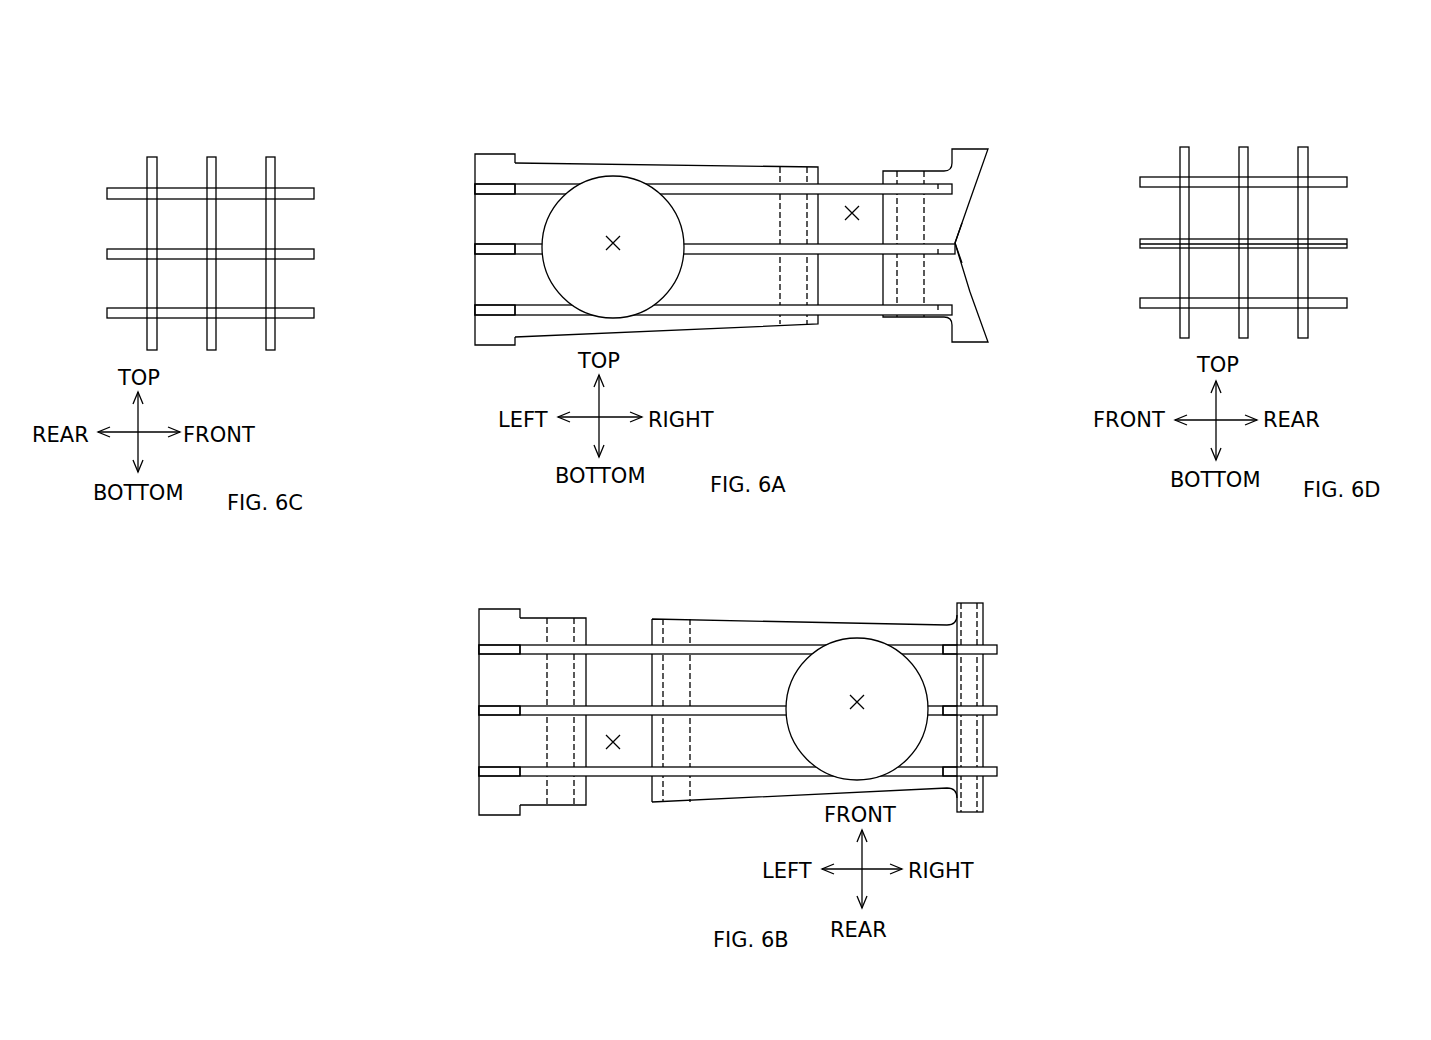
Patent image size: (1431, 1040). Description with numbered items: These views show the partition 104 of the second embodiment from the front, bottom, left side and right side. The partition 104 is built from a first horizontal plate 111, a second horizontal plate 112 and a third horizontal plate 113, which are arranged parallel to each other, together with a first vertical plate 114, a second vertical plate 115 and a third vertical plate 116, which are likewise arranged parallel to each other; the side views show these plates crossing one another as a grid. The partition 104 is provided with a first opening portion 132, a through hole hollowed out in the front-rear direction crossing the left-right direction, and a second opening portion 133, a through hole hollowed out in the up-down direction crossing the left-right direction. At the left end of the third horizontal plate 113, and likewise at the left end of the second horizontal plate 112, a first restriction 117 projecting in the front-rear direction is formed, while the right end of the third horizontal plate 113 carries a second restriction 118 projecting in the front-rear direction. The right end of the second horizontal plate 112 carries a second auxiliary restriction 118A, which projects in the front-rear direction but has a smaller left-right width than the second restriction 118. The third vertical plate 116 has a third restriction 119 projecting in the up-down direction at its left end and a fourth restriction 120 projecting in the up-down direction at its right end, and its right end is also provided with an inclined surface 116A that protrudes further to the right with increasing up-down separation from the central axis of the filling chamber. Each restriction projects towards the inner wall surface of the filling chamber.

In FIG. 6A, the partition 104 is at (740, 238).
In FIG. 6B, the partition 104 is at (735, 708).
In FIG. 6C, the first horizontal plate 111 is at (298, 189).
In FIG. 6D, the first horizontal plate 111 is at (1330, 178).
In FIG. 6A, the first horizontal plate 111 is at (743, 168).
In FIG. 6C, the second horizontal plate 112 is at (298, 250).
In FIG. 6D, the second horizontal plate 112 is at (1330, 240).
In FIG. 6A, the second horizontal plate 112 is at (702, 246).
In FIG. 6C, the third horizontal plate 113 is at (298, 309).
In FIG. 6D, the third horizontal plate 113 is at (1330, 299).
In FIG. 6A, the third horizontal plate 113 is at (745, 315).
In FIG. 6B, the third horizontal plate 113 is at (532, 622).
In FIG. 6C, the first vertical plate 114 is at (152, 157).
In FIG. 6D, the first vertical plate 114 is at (1303, 147).
In FIG. 6B, the first vertical plate 114 is at (640, 776).
In FIG. 6C, the second vertical plate 115 is at (211, 157).
In FIG. 6D, the second vertical plate 115 is at (1244, 147).
In FIG. 6B, the second vertical plate 115 is at (636, 712).
In FIG. 6C, the third vertical plate 116 is at (270, 157).
In FIG. 6D, the third vertical plate 116 is at (1185, 147).
In FIG. 6A, the third vertical plate 116 is at (552, 175).
In FIG. 6B, the third vertical plate 116 is at (600, 650).
In FIG. 6A, the inclined surface 116A is at (970, 208).
In FIG. 6A, the first restriction 117 is at (480, 189).
In FIG. 6B, the first restriction 117 is at (497, 612).
In FIG. 6A, the second restriction 118 is at (985, 163).
In FIG. 6B, the second restriction 118 is at (969, 615).
In FIG. 6A, the second auxiliary restriction 118A is at (960, 262).
In FIG. 6A, the third restriction 119 is at (493, 160).
In FIG. 6B, the third restriction 119 is at (483, 651).
In FIG. 6A, the fourth restriction 120 is at (970, 155).
In FIG. 6B, the fourth restriction 120 is at (977, 641).
In FIG. 6A, the first opening portion 132 is at (611, 236).
In FIG. 6B, the first opening portion 132 is at (615, 750).
In FIG. 6A, the second opening portion 133 is at (853, 207).
In FIG. 6B, the second opening portion 133 is at (856, 694).